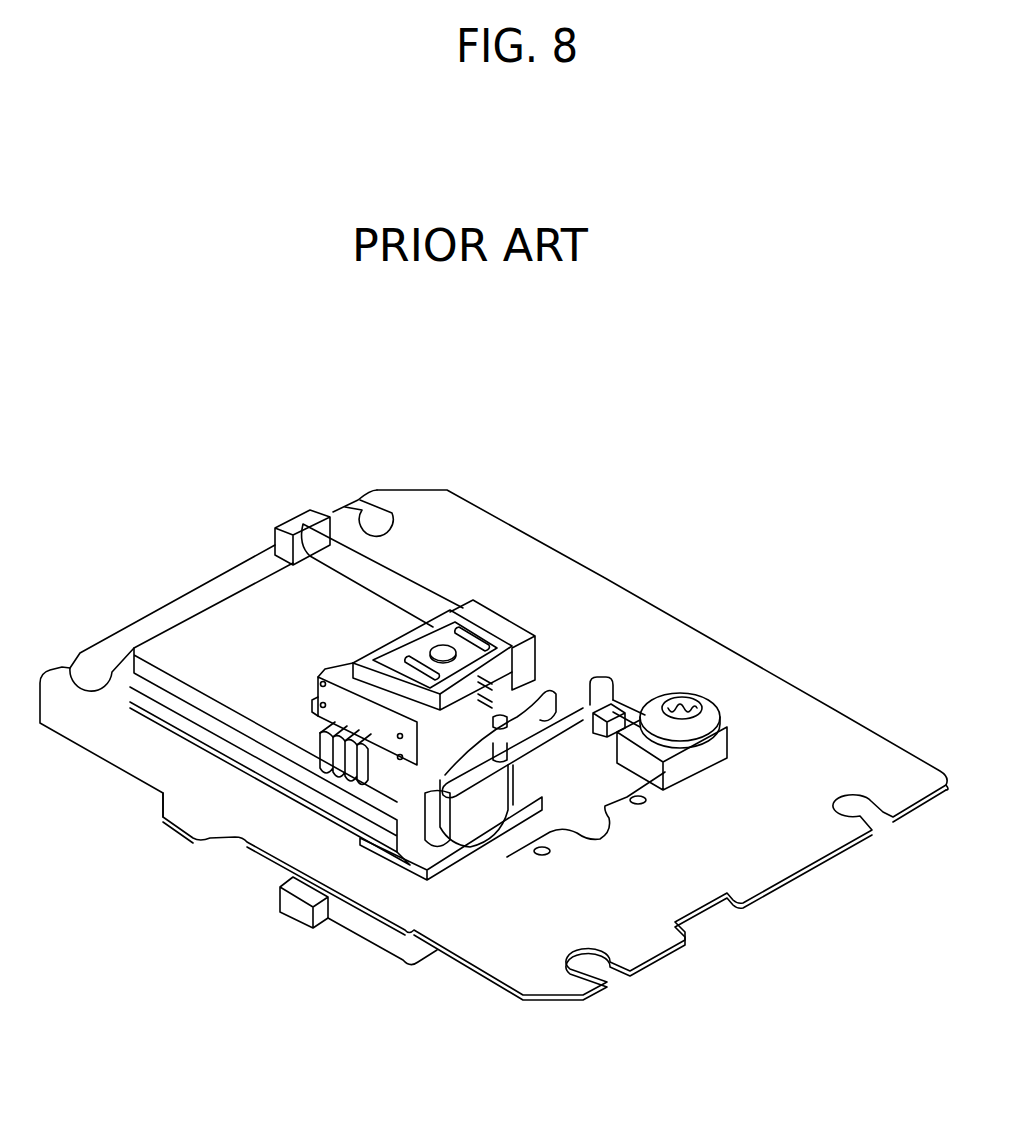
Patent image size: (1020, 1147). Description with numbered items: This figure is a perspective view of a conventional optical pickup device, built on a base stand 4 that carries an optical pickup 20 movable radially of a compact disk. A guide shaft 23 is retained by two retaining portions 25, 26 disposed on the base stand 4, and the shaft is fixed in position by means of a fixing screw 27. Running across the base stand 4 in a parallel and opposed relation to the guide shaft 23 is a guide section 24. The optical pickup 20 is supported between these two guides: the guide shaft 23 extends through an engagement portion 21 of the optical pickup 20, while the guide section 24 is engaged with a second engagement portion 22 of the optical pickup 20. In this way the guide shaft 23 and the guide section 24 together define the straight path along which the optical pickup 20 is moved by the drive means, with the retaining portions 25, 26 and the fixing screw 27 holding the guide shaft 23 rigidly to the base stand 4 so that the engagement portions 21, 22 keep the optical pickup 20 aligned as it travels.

The base stand 4 is at (790, 692).
The optical pickup 20 is at (492, 615).
The engagement portion 21 is at (603, 680).
The engagement portion 22 is at (425, 795).
The guide shaft 23 is at (410, 593).
The guide section 24 is at (217, 745).
The retaining portion 25 is at (703, 757).
The retaining portion 26 is at (298, 525).
The fixing screw 27 is at (673, 693).